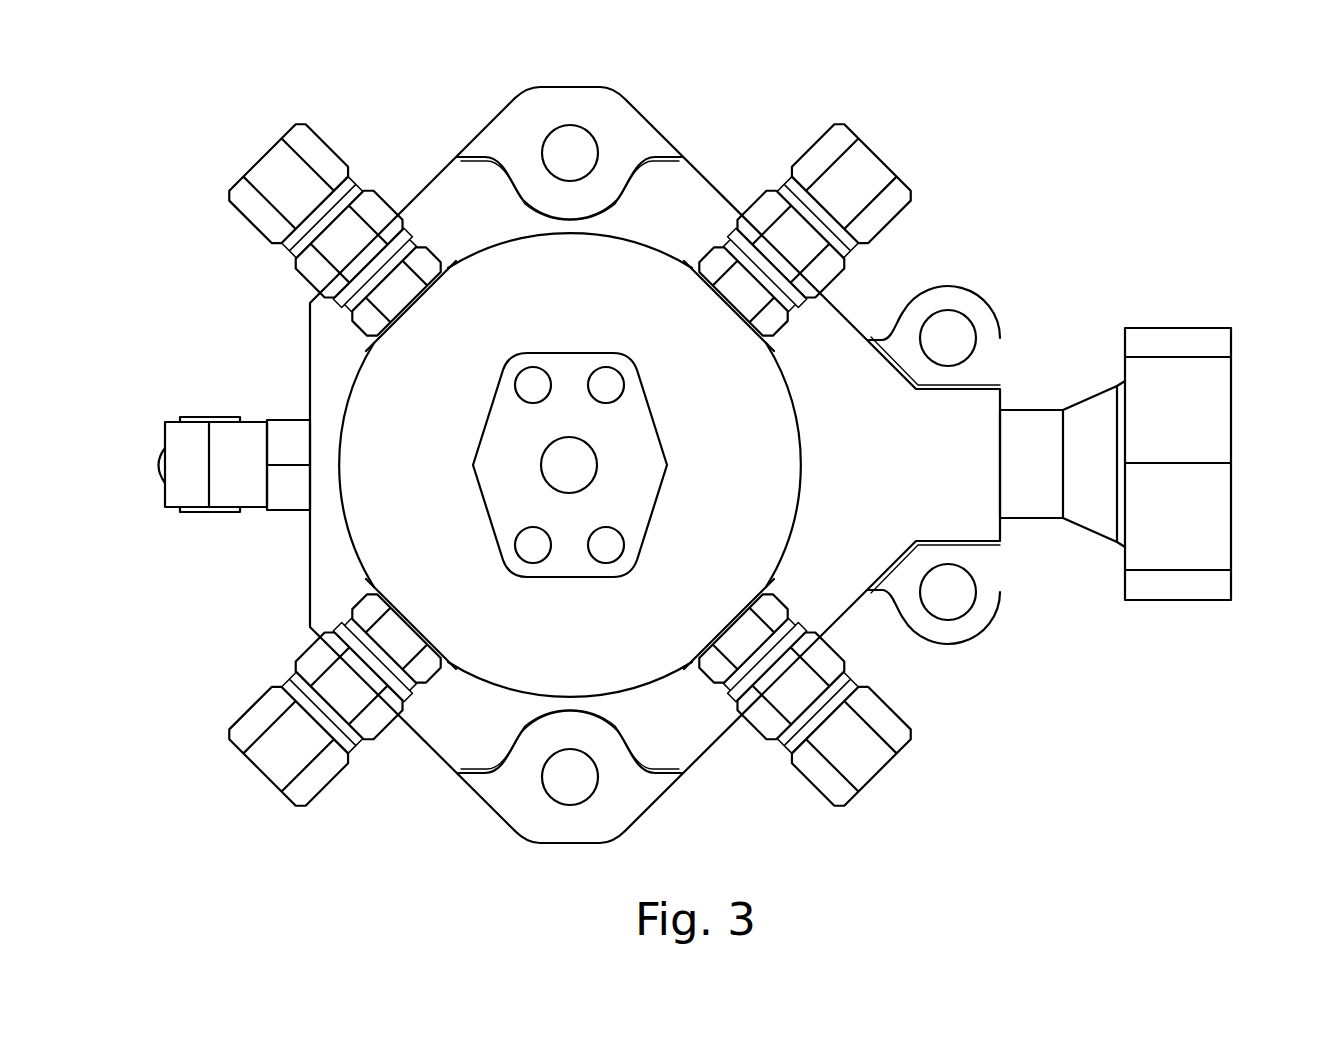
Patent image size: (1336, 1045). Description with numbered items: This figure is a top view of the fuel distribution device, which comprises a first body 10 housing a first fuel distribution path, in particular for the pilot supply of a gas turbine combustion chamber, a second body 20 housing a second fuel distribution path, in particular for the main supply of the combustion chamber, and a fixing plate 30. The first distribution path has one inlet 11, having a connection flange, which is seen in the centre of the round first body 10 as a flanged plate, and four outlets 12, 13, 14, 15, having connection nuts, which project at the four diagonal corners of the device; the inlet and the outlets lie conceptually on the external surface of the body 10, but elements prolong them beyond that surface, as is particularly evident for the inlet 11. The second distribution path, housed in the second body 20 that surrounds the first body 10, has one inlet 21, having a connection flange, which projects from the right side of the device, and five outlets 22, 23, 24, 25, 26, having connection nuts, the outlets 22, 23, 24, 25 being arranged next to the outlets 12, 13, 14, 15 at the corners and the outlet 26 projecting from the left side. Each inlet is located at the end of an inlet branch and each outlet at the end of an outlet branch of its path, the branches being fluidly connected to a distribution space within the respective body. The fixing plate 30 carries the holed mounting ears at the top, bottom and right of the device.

The first body 10 is at (752, 388).
The inlet 11 is at (517, 455).
The outlet 12 is at (785, 243).
The outlet 13 is at (780, 695).
The outlet 14 is at (348, 683).
The outlet 15 is at (345, 245).
The second body 20 is at (440, 202).
The inlet 21 is at (1185, 408).
The outlet 22 is at (848, 190).
The outlet 23 is at (865, 745).
The outlet 24 is at (293, 745).
The outlet 25 is at (290, 184).
The outlet 26 is at (208, 460).
The fixing plate 30 is at (617, 125).